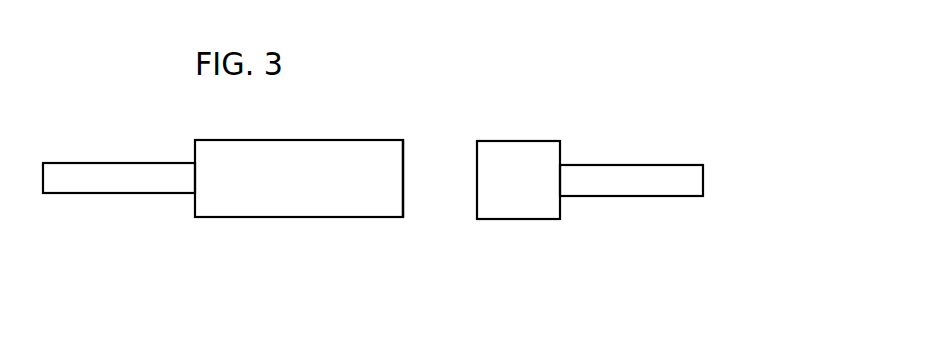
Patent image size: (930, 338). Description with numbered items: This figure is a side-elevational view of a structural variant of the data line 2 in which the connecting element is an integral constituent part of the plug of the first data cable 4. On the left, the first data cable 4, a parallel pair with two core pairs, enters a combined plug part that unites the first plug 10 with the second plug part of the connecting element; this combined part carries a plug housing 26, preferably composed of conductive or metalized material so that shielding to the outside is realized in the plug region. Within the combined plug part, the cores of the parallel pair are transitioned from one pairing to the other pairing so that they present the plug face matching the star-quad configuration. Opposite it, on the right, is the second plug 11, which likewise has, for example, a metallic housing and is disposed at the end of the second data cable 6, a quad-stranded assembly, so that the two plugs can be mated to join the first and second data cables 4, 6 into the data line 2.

The data line 2 is at (573, 73).
The first data cable 4 is at (107, 161).
The second data cable 6 is at (652, 152).
The first plug 10 is at (397, 207).
The second plug 11 is at (528, 198).
The plug housing 26 is at (353, 140).